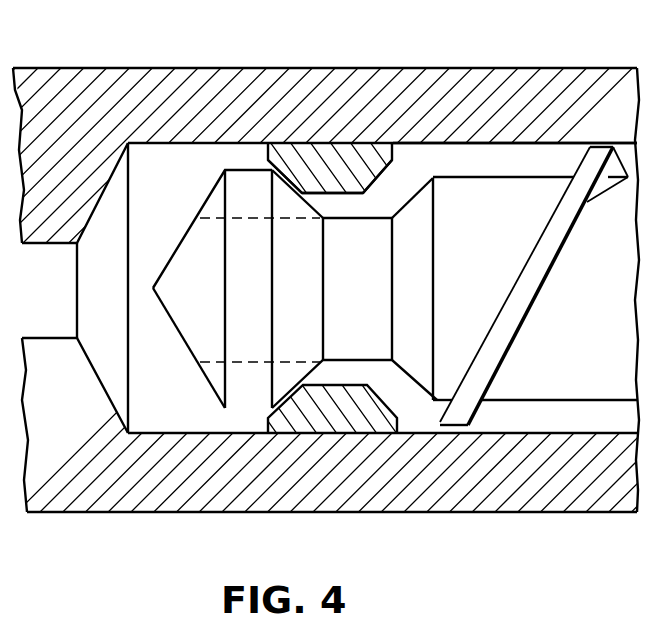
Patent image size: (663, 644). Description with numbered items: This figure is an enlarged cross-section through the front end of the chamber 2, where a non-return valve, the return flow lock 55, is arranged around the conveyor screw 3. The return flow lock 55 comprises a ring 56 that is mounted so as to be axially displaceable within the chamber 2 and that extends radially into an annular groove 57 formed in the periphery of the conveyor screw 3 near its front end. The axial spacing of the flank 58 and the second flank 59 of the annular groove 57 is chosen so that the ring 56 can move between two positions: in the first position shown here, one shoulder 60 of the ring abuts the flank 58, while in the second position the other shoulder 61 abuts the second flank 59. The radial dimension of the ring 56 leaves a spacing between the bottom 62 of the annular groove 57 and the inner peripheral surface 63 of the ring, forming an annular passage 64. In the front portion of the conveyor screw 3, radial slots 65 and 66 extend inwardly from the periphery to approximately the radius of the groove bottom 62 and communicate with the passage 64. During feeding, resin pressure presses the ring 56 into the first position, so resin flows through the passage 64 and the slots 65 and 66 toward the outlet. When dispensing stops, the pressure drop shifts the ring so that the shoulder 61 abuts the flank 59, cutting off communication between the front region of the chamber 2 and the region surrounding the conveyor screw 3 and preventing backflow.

The chamber 2 is at (514, 152).
The conveyor screw 3 is at (542, 195).
The return flow lock 55 is at (407, 157).
The ring 56 is at (330, 152).
The annular groove 57 is at (381, 220).
The flank 58 is at (307, 210).
The second flank 59 is at (410, 205).
The shoulder 60 is at (310, 158).
The other shoulder 61 is at (363, 172).
The bottom of the annular groove 62 is at (338, 220).
The inner peripheral surface 63 is at (350, 193).
The annular passage 64 is at (354, 376).
The radial slot 65 is at (232, 200).
The radial slot 66 is at (237, 393).